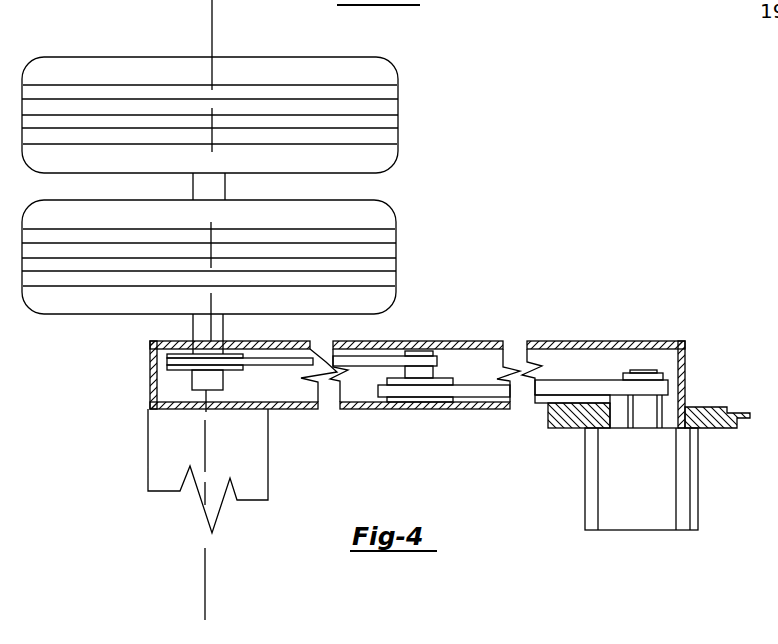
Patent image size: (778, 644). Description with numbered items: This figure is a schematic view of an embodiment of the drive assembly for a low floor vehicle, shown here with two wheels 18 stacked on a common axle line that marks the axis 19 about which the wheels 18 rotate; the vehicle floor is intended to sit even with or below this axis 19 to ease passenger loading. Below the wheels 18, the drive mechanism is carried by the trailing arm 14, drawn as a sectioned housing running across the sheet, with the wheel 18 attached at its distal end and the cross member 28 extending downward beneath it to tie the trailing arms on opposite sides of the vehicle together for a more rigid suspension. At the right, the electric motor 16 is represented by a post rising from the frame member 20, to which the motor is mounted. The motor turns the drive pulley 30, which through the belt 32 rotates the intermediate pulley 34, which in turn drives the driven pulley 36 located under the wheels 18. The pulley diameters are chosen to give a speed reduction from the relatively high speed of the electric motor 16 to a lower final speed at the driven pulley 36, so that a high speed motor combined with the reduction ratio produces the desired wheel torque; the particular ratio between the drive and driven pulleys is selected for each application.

The trailing arm 14 is at (295, 410).
The electric motor 16 is at (592, 492).
The wheel 18 is at (370, 117).
The axis 19 is at (213, 36).
The frame member 20 is at (705, 407).
The cross member 28 is at (178, 441).
The drive pulley 30 is at (640, 380).
The belt 32 is at (380, 360).
The intermediate pulley 34 is at (422, 351).
The driven pulley 36 is at (177, 371).